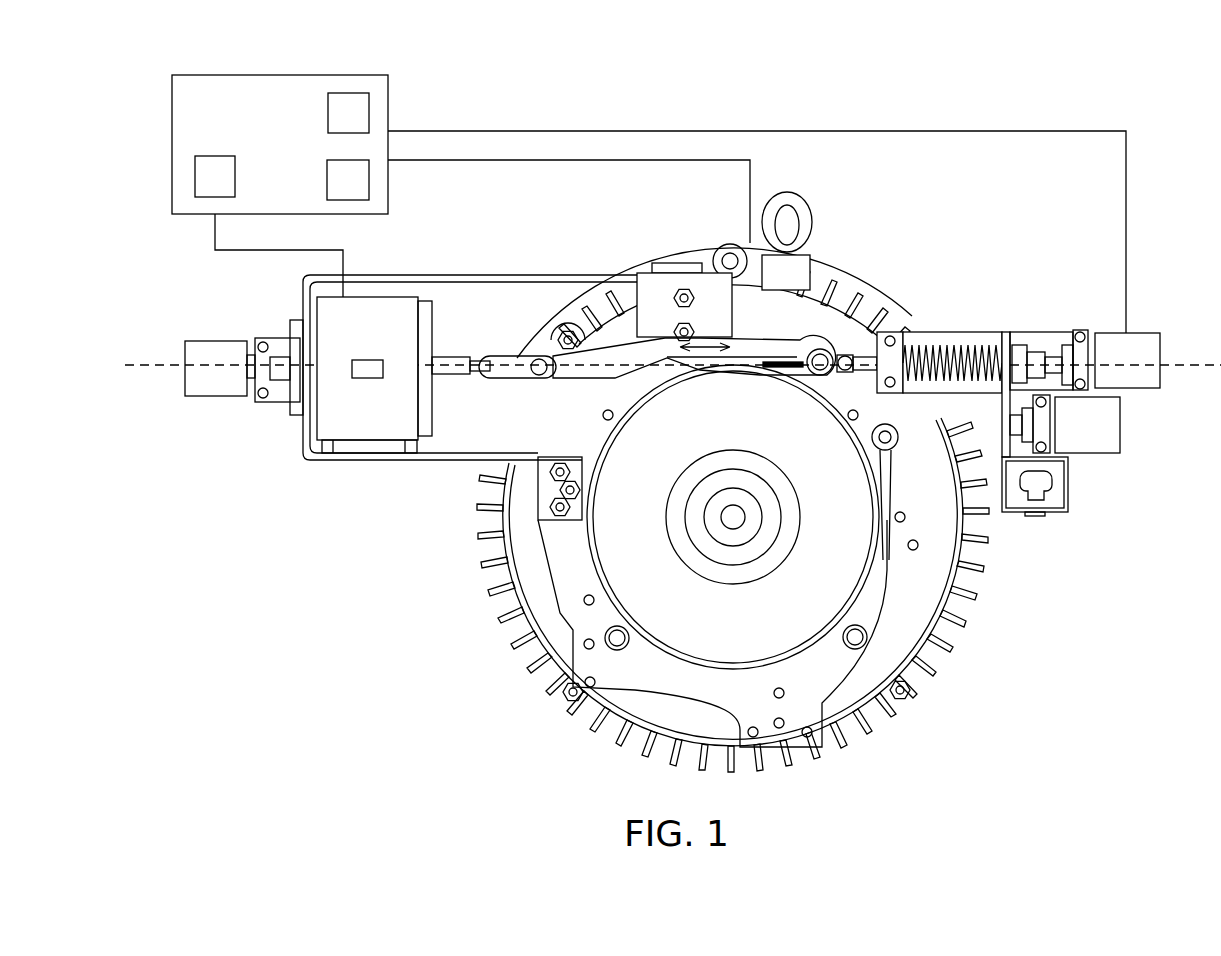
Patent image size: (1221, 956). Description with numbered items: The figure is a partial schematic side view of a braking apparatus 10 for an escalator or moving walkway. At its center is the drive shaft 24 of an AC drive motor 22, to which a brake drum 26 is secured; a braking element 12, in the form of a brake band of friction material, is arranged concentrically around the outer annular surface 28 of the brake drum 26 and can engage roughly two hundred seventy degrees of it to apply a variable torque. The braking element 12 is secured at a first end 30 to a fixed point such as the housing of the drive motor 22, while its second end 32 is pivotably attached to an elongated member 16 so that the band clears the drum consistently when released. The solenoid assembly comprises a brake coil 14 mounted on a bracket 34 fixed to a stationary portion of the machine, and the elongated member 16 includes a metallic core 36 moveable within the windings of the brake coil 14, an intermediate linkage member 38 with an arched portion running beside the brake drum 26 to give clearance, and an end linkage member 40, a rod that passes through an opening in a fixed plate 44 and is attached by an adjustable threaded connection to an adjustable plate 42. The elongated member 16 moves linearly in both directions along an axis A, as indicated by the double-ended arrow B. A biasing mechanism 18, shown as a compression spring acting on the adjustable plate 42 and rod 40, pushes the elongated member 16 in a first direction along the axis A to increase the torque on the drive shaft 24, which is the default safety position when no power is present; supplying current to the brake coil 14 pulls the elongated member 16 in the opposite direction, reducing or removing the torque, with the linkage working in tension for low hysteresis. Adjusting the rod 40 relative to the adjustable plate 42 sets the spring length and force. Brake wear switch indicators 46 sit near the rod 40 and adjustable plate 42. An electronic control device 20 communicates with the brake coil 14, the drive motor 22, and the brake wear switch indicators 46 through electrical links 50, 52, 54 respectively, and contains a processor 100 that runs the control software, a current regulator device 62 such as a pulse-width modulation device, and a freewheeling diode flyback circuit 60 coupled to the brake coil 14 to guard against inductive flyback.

The braking apparatus 10 is at (378, 525).
The braking element 12 is at (880, 578).
The brake coil 14 is at (330, 425).
The elongated member 16 is at (491, 340).
The biasing mechanism 18 is at (955, 345).
The electronic control device 20 is at (292, 155).
The drive motor 22 is at (527, 579).
The drive shaft 24 is at (700, 538).
The brake drum 26 is at (688, 645).
The outer annular surface 28 is at (797, 650).
The first end 30 is at (876, 441).
The second end 32 is at (830, 348).
The bracket 34 is at (460, 275).
The metallic core 36 is at (455, 378).
The intermediate linkage member 38 is at (776, 347).
The end linkage member 40 is at (846, 373).
The adjustable plate 42 is at (1005, 330).
The fixed plate 44 is at (895, 333).
The brake wear switch indicator 46 is at (1141, 423).
The electrical link 50 is at (213, 236).
The electrical link 52 is at (558, 162).
The electrical link 54 is at (666, 130).
The freewheeling diode flyback circuit 60 is at (217, 165).
The current regulator device 62 is at (329, 180).
The processor 100 is at (330, 108).
The axis A is at (138, 360).
The double-ended arrow B is at (706, 352).